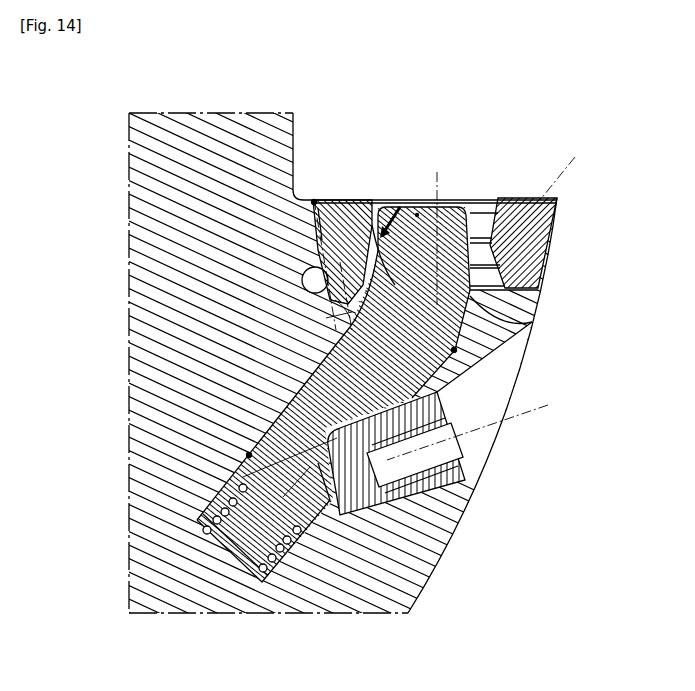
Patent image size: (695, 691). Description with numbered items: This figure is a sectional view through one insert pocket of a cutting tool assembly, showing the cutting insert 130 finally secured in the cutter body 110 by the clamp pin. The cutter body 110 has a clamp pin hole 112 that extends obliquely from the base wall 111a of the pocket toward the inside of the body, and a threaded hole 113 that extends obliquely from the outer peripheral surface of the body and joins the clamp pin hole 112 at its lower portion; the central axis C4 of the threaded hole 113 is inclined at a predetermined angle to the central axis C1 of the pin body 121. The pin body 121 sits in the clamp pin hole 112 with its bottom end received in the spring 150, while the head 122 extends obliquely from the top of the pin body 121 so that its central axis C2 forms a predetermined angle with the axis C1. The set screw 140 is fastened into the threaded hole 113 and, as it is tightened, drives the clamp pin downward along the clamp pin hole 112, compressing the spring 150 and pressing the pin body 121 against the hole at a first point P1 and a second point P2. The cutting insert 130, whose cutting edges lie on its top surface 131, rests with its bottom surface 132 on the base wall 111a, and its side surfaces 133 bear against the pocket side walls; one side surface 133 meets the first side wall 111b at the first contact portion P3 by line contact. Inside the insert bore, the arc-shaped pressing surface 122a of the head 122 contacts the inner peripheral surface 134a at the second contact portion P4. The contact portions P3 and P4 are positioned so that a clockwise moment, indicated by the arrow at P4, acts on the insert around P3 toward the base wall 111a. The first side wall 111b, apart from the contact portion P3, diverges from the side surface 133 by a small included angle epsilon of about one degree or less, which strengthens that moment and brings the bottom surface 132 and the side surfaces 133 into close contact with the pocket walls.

The cutter body 110 is at (208, 157).
The base wall 111a is at (520, 282).
The first side wall 111b is at (313, 218).
The clamp pin hole 112 is at (208, 503).
The threaded hole 113 is at (468, 445).
The pin body 121 is at (480, 340).
The head 122 is at (463, 205).
The pressing surface 122a is at (378, 215).
The cutting insert 130 is at (341, 230).
The top surface 131 is at (510, 203).
The bottom surface 132 is at (520, 308).
The side surfaces 133 is at (545, 238).
The inner peripheral surface 134a is at (380, 235).
The set screw 140 is at (375, 498).
The spring 150 is at (268, 550).
The first point P1 is at (247, 455).
The second point P2 is at (456, 350).
The first contact portion P3 is at (314, 200).
The second contact portion P4 is at (417, 215).
The central axis of pin body C1 is at (566, 214).
The central axis of head C2 is at (437, 229).
The central axis of threaded hole C4 is at (481, 427).